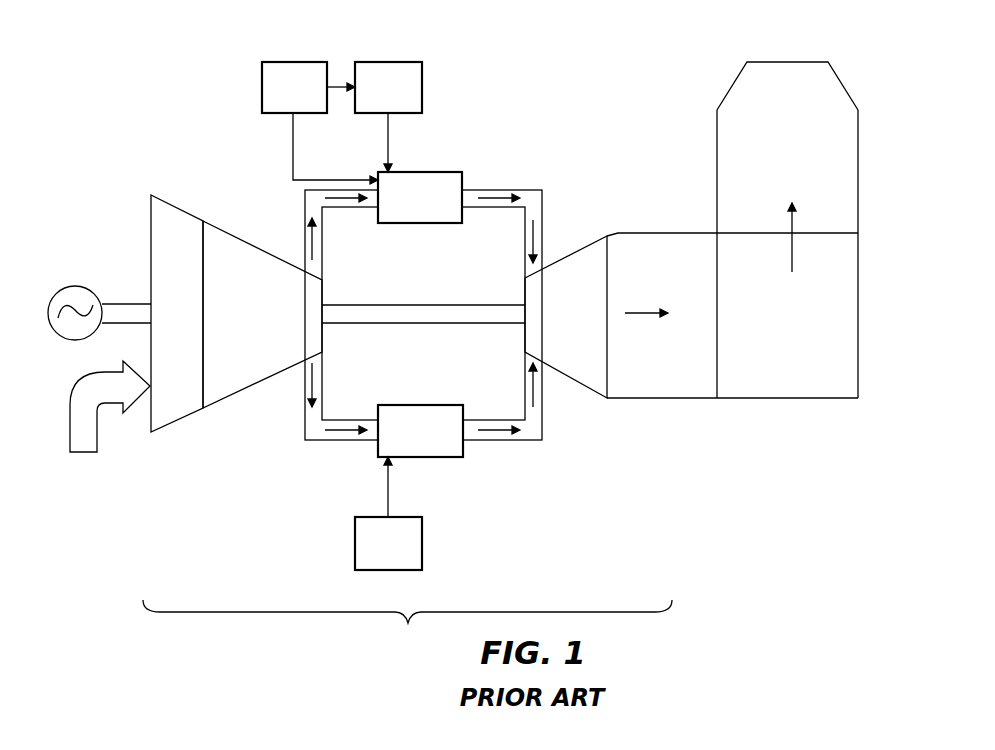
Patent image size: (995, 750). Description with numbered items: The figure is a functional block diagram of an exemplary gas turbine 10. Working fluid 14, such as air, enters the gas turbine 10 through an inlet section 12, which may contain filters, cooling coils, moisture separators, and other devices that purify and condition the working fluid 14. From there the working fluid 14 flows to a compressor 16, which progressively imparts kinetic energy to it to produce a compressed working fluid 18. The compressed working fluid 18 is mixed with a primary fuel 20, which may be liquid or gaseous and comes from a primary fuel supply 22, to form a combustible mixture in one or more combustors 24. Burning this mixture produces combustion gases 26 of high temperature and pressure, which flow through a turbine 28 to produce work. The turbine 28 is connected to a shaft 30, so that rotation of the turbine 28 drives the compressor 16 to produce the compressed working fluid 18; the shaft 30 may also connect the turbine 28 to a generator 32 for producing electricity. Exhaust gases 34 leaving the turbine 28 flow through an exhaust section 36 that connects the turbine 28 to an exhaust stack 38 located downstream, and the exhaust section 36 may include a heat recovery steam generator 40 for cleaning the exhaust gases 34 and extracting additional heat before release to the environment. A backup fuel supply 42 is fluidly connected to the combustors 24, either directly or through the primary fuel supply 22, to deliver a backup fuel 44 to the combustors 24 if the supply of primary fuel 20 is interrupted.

The gas turbine 10 is at (407, 628).
The inlet section 12 is at (167, 326).
The working fluid 14 is at (82, 453).
The compressor 16 is at (249, 326).
The compressed working fluid 18 is at (312, 251).
The primary fuel 20 is at (388, 135).
The primary fuel supply 22 is at (377, 101).
The combustor 24 is at (409, 211).
The combustion gases 26 is at (535, 240).
The turbine 28 is at (554, 326).
The shaft 30 is at (415, 323).
The generator 32 is at (73, 286).
The exhaust gases 34 is at (793, 243).
The exhaust section 36 is at (644, 284).
The exhaust stack 38 is at (858, 150).
The heat recovery steam generator 40 is at (776, 324).
The backup fuel supply 42 is at (283, 101).
The backup fuel 44 is at (336, 83).